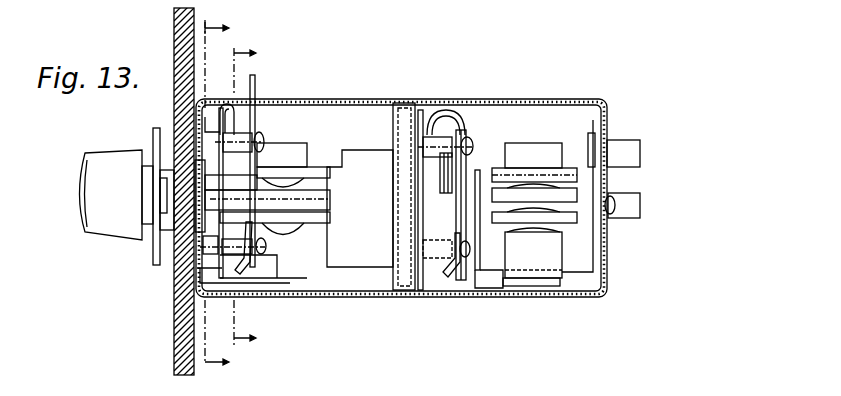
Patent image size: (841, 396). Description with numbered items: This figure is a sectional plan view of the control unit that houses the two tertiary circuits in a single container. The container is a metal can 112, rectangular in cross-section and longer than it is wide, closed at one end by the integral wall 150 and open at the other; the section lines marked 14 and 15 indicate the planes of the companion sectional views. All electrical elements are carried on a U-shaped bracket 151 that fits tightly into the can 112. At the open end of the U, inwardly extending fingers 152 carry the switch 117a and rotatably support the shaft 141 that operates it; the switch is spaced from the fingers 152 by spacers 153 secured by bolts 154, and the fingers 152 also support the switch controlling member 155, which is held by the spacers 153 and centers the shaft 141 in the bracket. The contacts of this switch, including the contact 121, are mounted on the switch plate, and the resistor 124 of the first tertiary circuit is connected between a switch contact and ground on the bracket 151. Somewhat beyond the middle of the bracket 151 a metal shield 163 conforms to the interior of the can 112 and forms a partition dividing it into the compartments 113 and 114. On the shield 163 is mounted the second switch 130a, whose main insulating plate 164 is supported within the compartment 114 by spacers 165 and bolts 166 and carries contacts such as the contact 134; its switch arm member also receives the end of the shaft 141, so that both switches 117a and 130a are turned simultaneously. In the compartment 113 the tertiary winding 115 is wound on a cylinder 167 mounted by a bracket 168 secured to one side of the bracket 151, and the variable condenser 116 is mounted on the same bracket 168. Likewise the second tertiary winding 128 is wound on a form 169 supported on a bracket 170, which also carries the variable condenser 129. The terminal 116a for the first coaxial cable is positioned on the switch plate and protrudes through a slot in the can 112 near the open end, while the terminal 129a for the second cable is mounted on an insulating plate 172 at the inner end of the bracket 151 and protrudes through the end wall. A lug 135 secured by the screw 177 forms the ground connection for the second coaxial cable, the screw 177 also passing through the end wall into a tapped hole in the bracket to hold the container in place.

The section line 14- 14 is at (230, 197).
The section line 15- 15 is at (257, 197).
The metal can 112 is at (444, 96).
The compartment 113 is at (341, 122).
The compartment 114 is at (521, 103).
The tertiary winding 115 is at (327, 171).
The variable condenser 116 is at (384, 173).
The terminal 116a is at (255, 79).
The switch 117a is at (260, 160).
The contact 121 is at (243, 285).
The resistor 124 is at (233, 163).
The tertiary winding 128 is at (578, 216).
The variable condenser 129 is at (494, 258).
The terminal 129a is at (632, 151).
The second switch 130a is at (570, 134).
The contact 134 is at (445, 280).
The lug 135 is at (642, 208).
The shaft 141 is at (360, 200).
The integral wall 150 is at (608, 283).
The U-shaped bracket 151 is at (360, 112).
The fingers 152 is at (214, 112).
The spacers 153 is at (233, 135).
The bolts 154 is at (263, 147).
The switch controlling member 155 is at (232, 208).
The metal shield 163 is at (423, 101).
The main insulating plate 164 is at (466, 130).
The spacers 165 is at (449, 132).
The bolts 166 is at (473, 149).
The cylinder 167 is at (298, 263).
The bracket 168 is at (382, 278).
The form 169 is at (557, 276).
The bracket 170 is at (484, 283).
The insulating plate 172 is at (591, 143).
The screw 177 is at (620, 198).